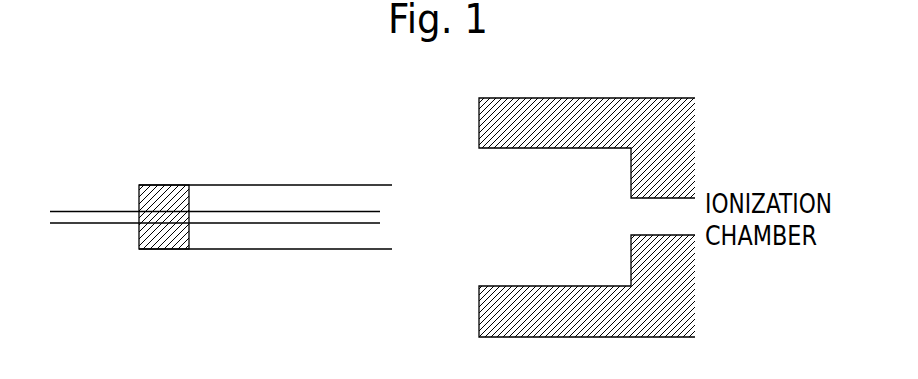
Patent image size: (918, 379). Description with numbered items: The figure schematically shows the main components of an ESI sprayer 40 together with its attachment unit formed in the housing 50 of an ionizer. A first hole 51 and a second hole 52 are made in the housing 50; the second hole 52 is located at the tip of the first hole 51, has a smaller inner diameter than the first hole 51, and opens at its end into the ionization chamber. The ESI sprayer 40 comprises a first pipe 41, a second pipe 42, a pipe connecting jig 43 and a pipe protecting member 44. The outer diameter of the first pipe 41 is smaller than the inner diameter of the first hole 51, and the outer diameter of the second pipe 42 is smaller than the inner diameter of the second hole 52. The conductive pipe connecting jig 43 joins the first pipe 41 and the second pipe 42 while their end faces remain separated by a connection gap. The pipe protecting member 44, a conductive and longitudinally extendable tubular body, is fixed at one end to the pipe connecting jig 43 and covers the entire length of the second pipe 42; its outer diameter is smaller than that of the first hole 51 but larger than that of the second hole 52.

The ESI sprayer 40 is at (221, 190).
The first pipe 41 is at (75, 225).
The second pipe 42 is at (303, 225).
The pipe connecting jig 43 is at (173, 247).
The pipe protecting member 44 is at (258, 250).
The housing 50 is at (479, 297).
The first hole 51 is at (488, 236).
The second hole 52 is at (633, 225).